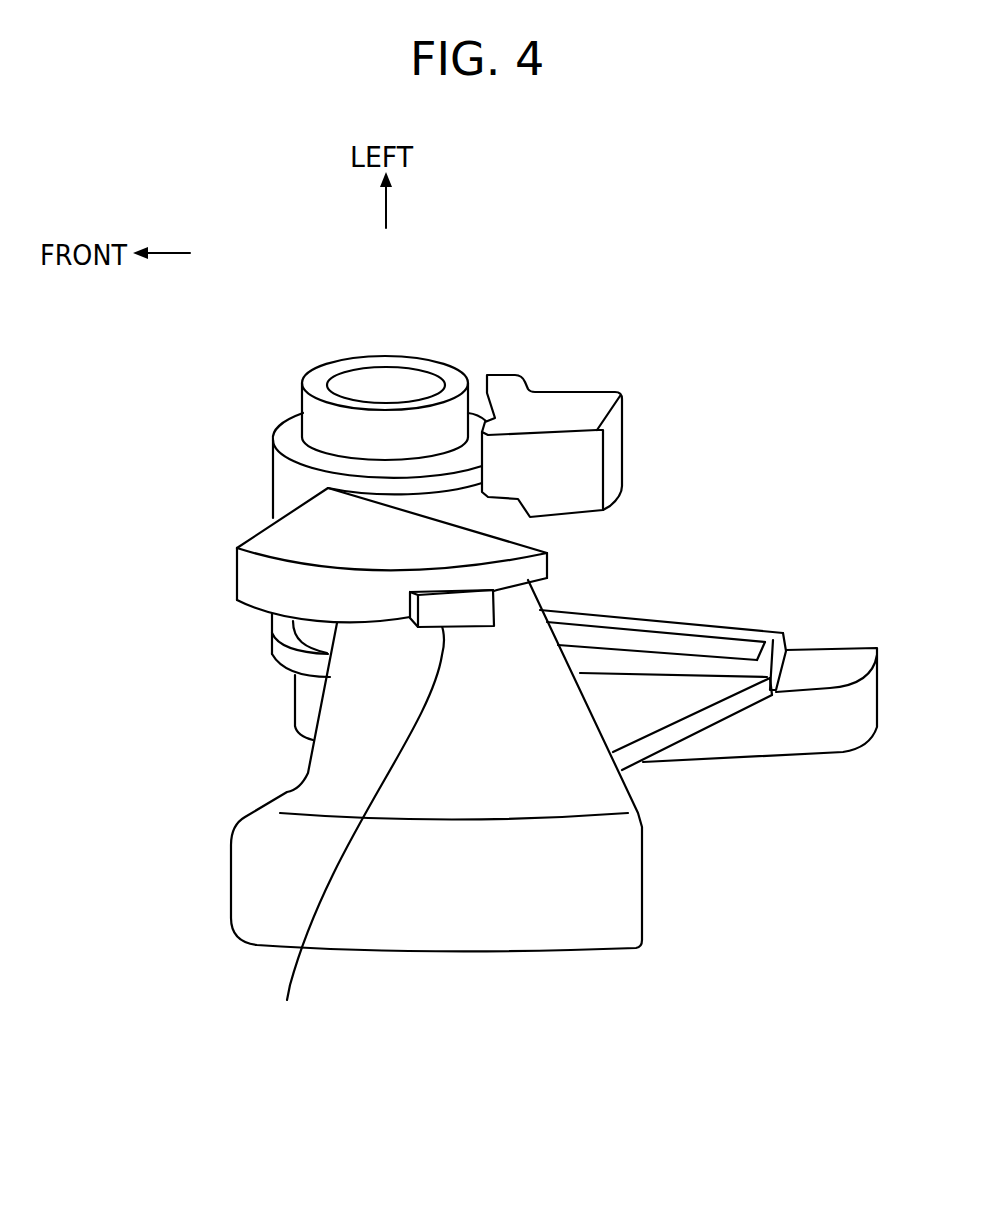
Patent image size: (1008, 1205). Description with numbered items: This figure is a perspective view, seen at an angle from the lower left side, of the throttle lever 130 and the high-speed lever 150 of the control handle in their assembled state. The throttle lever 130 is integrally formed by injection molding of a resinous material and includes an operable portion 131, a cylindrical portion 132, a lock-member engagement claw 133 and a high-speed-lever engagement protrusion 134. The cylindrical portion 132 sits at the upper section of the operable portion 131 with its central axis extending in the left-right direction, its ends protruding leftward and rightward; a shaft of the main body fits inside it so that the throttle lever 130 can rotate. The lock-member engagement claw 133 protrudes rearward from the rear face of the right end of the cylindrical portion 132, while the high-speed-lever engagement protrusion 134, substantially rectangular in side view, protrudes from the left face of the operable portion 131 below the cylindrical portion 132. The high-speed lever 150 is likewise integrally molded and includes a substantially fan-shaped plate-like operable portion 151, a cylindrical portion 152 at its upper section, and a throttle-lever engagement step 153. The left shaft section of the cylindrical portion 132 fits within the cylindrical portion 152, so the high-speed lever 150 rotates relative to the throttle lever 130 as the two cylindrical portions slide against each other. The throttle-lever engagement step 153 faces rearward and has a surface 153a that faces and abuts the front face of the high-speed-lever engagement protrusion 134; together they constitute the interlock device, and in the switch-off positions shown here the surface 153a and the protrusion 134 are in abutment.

The throttle lever 130 is at (236, 728).
The operable portion 131 is at (327, 775).
The cylindrical portion 132 is at (300, 690).
The lock-member engagement claw 133 is at (867, 650).
The high-speed-lever engagement protrusion 134 is at (488, 613).
The high-speed lever 150 is at (222, 503).
The operable portion 151 is at (243, 577).
The cylindrical portion 152 is at (443, 363).
The throttle-lever engagement step 153 is at (333, 819).
The surface 153a is at (333, 819).